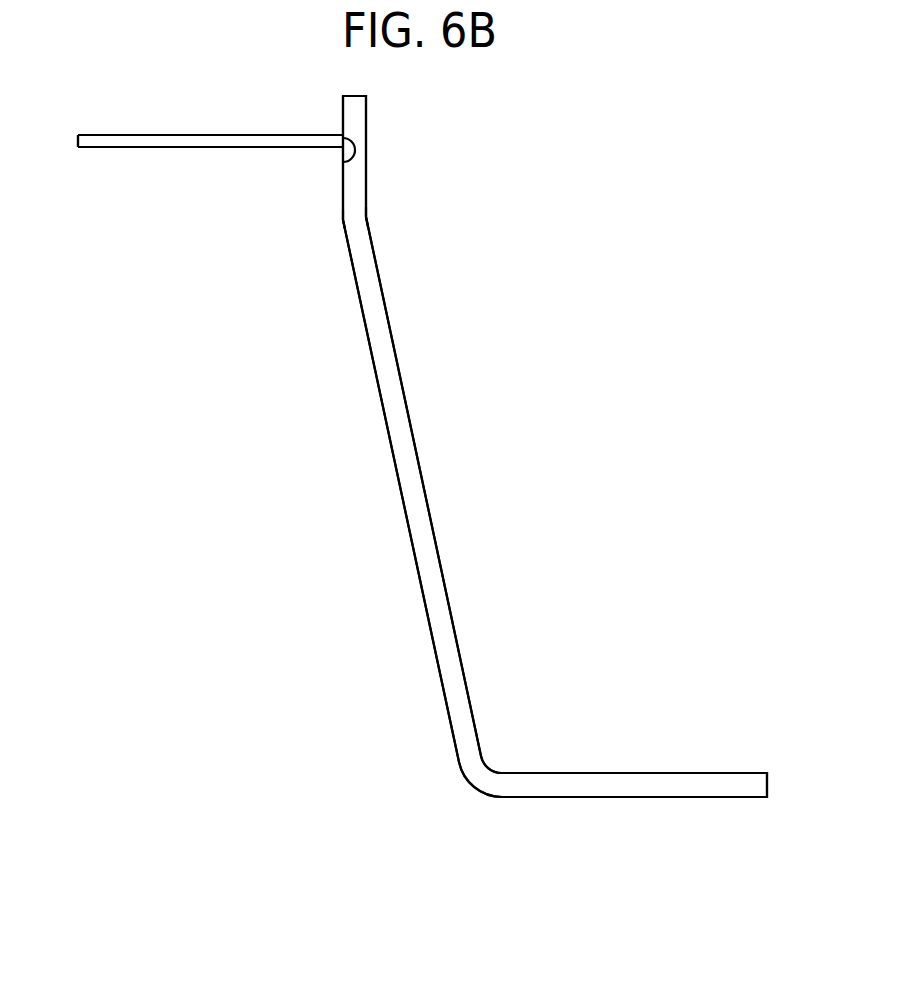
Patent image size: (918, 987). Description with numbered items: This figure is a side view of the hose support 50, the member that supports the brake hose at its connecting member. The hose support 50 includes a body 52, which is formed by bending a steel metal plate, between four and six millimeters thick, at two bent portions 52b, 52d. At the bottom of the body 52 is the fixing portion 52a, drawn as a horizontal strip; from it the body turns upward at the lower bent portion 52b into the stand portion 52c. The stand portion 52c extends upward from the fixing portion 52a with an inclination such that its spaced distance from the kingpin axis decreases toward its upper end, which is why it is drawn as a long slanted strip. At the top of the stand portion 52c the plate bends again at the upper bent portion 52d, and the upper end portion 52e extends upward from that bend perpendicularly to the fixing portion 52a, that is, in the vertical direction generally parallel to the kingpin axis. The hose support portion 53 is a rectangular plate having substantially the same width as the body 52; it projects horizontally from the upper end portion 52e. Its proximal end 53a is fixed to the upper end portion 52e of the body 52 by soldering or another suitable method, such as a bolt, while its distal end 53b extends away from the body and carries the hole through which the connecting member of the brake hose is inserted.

The hose support 50 is at (422, 452).
The body 52 is at (510, 467).
The fixing portion 52a is at (715, 772).
The bent portion 52b is at (475, 787).
The stand portion 52c is at (402, 492).
The bent portion 52d is at (340, 220).
The upper end portion 52e is at (367, 177).
The hose support portion 53 is at (216, 140).
The proximal end 53a is at (343, 160).
The distal end 53b is at (102, 148).